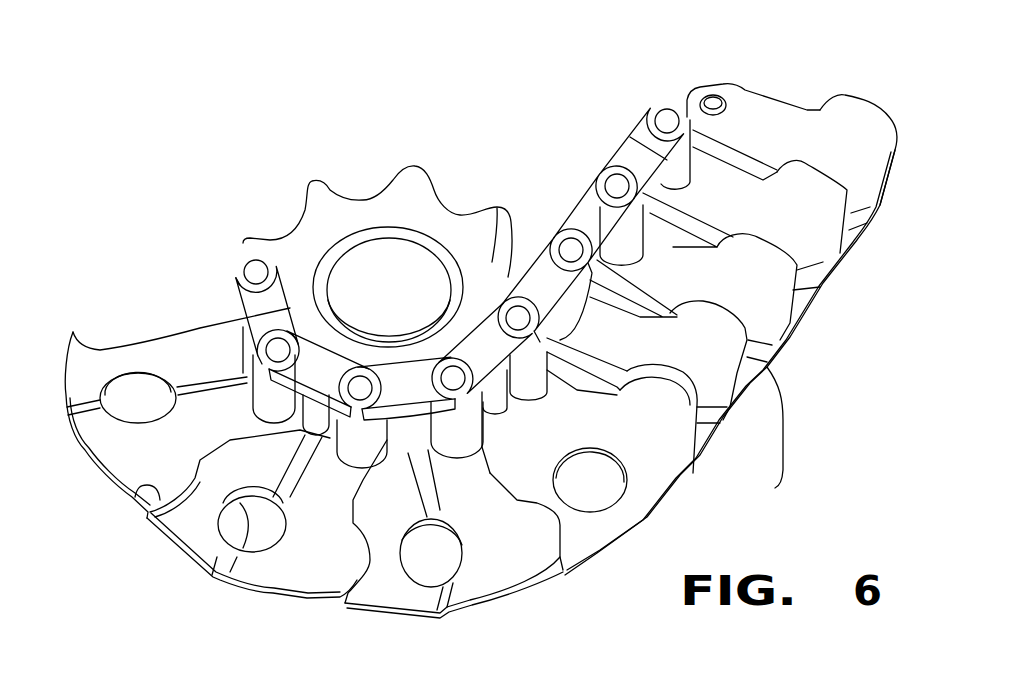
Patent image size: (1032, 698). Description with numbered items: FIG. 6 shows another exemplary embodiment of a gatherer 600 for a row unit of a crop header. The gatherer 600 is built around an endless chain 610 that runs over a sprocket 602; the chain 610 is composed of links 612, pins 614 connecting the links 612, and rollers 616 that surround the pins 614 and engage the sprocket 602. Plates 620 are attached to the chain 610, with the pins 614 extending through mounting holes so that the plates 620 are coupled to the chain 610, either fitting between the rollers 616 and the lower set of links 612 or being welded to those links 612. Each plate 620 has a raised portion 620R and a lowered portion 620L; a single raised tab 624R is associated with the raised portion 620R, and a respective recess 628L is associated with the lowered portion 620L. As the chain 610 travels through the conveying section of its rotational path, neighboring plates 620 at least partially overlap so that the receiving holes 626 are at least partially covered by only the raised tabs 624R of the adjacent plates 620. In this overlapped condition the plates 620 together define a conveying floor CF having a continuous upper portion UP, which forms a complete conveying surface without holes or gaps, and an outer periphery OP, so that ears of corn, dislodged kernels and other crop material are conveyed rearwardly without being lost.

The gatherer 600 is at (472, 120).
The sprocket 602 is at (320, 192).
The chain 610 is at (597, 176).
The link 612 is at (570, 225).
The pin 614 is at (667, 118).
The roller 616 is at (260, 397).
The plate 620 is at (660, 500).
The lowered portion 620L is at (395, 590).
The raised portion 620R is at (514, 557).
The raised tab 624R is at (172, 483).
The receiving hole 626 is at (247, 500).
The recess 628L is at (93, 343).
The conveying floor CF is at (768, 210).
The continuous upper portion UP is at (808, 216).
The outer periphery OP is at (823, 283).